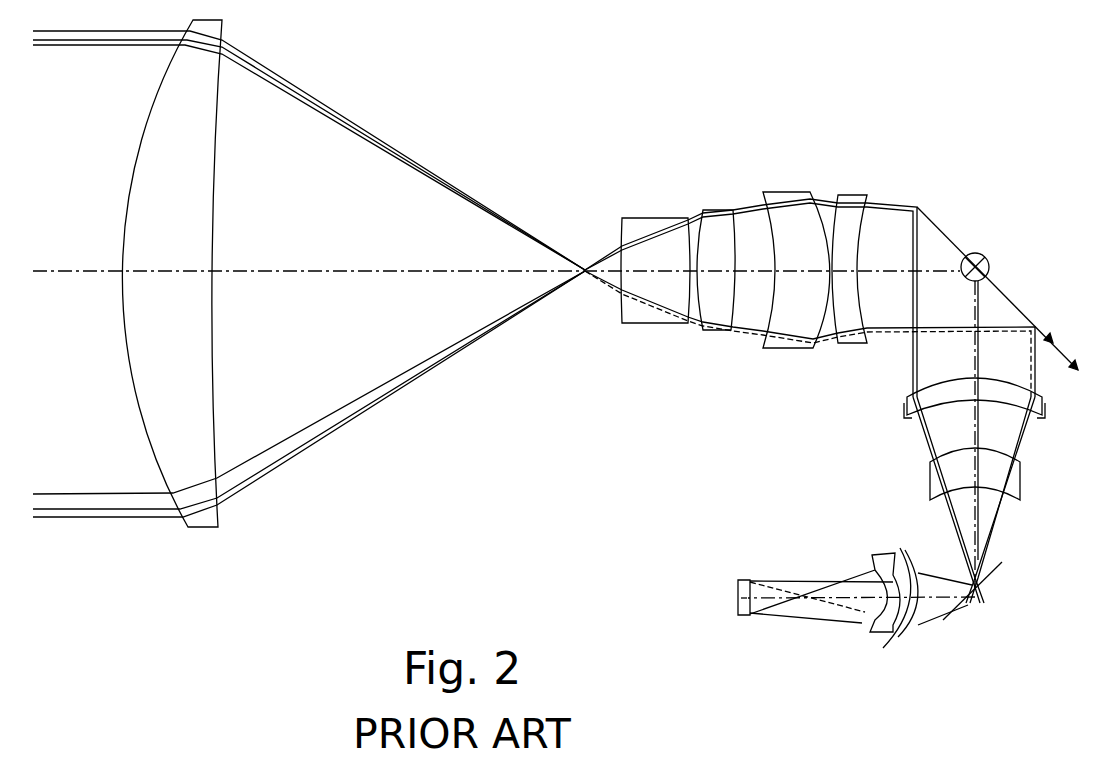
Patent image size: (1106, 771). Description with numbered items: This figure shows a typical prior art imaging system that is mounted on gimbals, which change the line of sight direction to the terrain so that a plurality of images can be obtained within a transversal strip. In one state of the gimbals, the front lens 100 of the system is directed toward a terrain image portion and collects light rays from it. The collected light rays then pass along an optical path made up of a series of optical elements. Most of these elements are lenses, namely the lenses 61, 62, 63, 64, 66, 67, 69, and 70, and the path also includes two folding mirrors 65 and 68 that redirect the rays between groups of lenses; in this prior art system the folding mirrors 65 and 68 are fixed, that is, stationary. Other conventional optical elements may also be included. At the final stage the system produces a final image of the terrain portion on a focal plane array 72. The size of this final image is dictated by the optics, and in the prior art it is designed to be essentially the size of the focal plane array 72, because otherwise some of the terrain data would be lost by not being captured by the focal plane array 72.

The front lens 100 is at (132, 157).
The lens 61 is at (643, 216).
The lens 62 is at (718, 208).
The lens 63 is at (787, 190).
The lens 64 is at (853, 193).
The folding mirror 65 is at (985, 258).
The lens 66 is at (905, 411).
The lens 67 is at (930, 486).
The folding mirror 68 is at (980, 595).
The lens 69 is at (897, 639).
The lens 70 is at (871, 628).
The focal plane array 72 is at (735, 592).